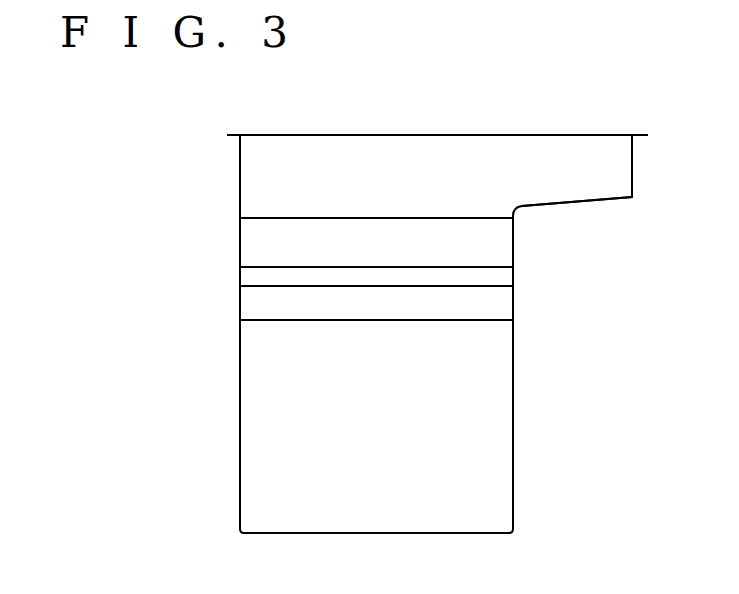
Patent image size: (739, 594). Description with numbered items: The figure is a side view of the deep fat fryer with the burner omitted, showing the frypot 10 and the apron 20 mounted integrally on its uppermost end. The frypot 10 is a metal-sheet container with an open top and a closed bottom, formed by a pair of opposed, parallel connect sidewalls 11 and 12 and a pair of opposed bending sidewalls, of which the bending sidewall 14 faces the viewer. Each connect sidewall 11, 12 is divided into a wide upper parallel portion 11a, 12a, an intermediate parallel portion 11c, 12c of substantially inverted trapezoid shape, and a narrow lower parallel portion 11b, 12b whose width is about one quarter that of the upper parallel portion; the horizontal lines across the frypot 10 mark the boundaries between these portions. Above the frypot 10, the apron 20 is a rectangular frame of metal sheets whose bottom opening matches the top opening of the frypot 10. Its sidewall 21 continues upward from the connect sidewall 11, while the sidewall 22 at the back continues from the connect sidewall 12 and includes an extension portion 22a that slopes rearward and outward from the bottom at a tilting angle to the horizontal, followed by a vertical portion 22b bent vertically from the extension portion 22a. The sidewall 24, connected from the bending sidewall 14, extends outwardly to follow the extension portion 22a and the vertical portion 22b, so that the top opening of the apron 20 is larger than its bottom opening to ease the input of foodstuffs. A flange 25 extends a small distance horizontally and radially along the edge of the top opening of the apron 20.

The frypot 10 is at (516, 329).
The connect sidewall 11 is at (238, 374).
The upper parallel portion 11a is at (240, 240).
The lower parallel portion 11b is at (240, 423).
The intermediate parallel portion 11c is at (240, 300).
The connect sidewall 12 is at (516, 375).
The upper parallel portion 12a is at (515, 253).
The lower parallel portion 12b is at (513, 443).
The intermediate parallel portion 12c is at (513, 299).
The bending sidewall 14 is at (492, 487).
The apron 20 is at (634, 197).
The sidewall 21 is at (240, 163).
The sidewall 22 is at (634, 182).
The extension portion 22a is at (587, 203).
The vertical portion 22b is at (632, 160).
The sidewall 24 is at (387, 165).
The flange 25 is at (640, 137).